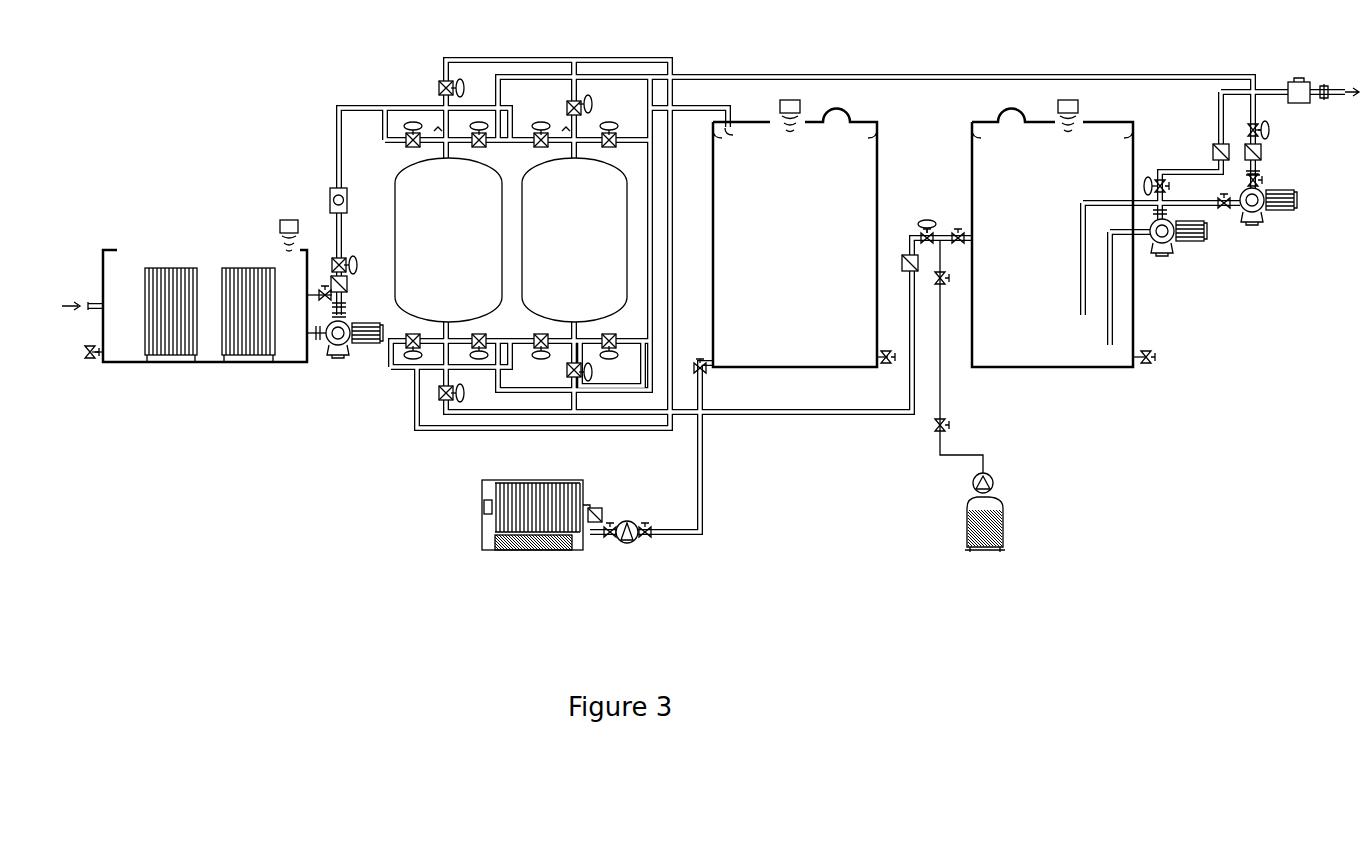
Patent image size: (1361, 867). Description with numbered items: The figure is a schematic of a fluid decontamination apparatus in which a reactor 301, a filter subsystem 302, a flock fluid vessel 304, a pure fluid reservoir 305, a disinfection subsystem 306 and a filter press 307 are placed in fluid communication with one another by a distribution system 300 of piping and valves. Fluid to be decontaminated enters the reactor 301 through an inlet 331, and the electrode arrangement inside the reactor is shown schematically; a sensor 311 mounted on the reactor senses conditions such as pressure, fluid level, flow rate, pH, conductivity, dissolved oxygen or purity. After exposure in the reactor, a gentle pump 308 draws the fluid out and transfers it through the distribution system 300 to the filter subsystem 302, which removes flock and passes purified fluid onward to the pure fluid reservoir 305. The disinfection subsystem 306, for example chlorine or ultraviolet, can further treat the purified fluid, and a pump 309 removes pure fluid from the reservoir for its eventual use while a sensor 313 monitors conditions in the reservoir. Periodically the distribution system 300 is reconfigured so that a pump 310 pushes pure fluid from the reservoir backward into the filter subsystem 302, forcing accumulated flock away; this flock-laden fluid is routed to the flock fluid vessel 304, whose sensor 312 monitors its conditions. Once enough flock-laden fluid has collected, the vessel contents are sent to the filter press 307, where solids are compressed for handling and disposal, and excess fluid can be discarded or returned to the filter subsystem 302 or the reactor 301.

The distribution system 300 is at (394, 82).
The reactor 301 is at (130, 363).
The filter subsystem 302 is at (400, 313).
The flock fluid vessel 304 is at (790, 370).
The pure fluid reservoir 305 is at (1030, 368).
The disinfection subsystem 306 is at (1003, 512).
The filter press 307 is at (553, 552).
The pump 308 is at (328, 347).
The pump 309 is at (1172, 252).
The pump 310 is at (1260, 213).
The sensor 311 is at (280, 235).
The sensor 312 is at (783, 100).
The sensor 313 is at (1060, 98).
The inlet 331 is at (92, 303).